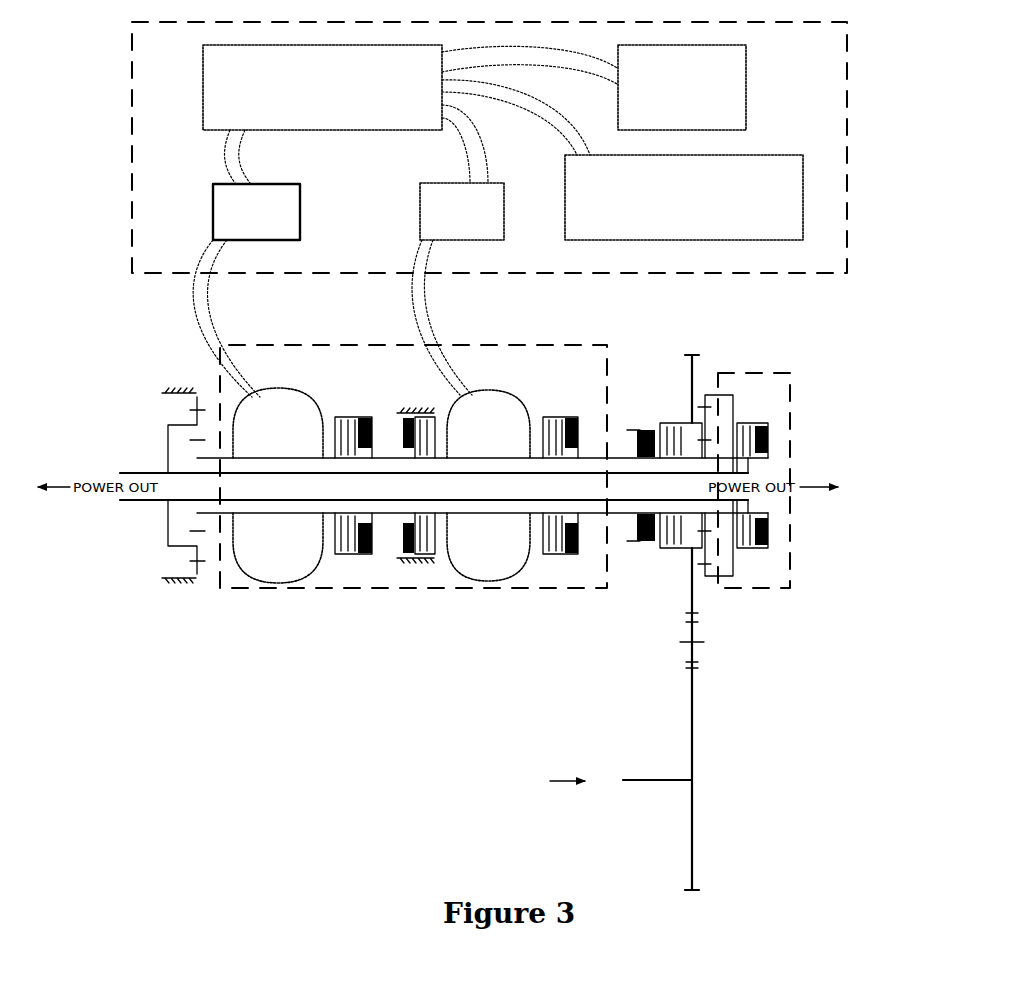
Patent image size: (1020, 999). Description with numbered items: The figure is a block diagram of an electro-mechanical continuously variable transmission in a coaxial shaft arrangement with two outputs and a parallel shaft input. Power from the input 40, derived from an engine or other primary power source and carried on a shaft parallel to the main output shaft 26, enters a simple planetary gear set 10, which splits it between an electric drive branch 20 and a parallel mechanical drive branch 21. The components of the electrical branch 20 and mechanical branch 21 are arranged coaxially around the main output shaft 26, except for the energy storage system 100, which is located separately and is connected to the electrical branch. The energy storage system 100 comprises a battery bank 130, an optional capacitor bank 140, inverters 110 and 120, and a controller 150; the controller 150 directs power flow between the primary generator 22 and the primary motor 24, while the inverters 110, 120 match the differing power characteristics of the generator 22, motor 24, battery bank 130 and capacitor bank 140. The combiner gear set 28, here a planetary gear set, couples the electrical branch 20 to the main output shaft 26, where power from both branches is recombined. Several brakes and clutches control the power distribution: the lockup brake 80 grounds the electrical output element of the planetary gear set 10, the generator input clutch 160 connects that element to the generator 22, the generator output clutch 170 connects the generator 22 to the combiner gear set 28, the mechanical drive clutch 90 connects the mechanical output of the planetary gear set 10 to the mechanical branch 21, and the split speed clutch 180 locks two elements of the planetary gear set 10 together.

The energy storage system 100 is at (845, 270).
The controller 150 is at (328, 130).
The capacitor bank 140 is at (747, 94).
The battery bank 130 is at (654, 242).
The inverter 120 is at (213, 203).
The inverter 110 is at (420, 203).
The electric drive branch 20 is at (605, 352).
The mechanical drive branch 21 is at (790, 588).
The combiner gear set 28 is at (156, 436).
The main output shaft 26 is at (141, 507).
The primary motor 24 is at (303, 397).
The primary generator 22 is at (508, 393).
The generator output clutch 170 is at (338, 562).
The lockup brake 80 is at (425, 565).
The generator input clutch 160 is at (546, 562).
The split speed clutch 180 is at (660, 557).
The mechanical drive clutch 90 is at (777, 418).
The planetary gear set 10 is at (688, 421).
The input 40 is at (642, 783).